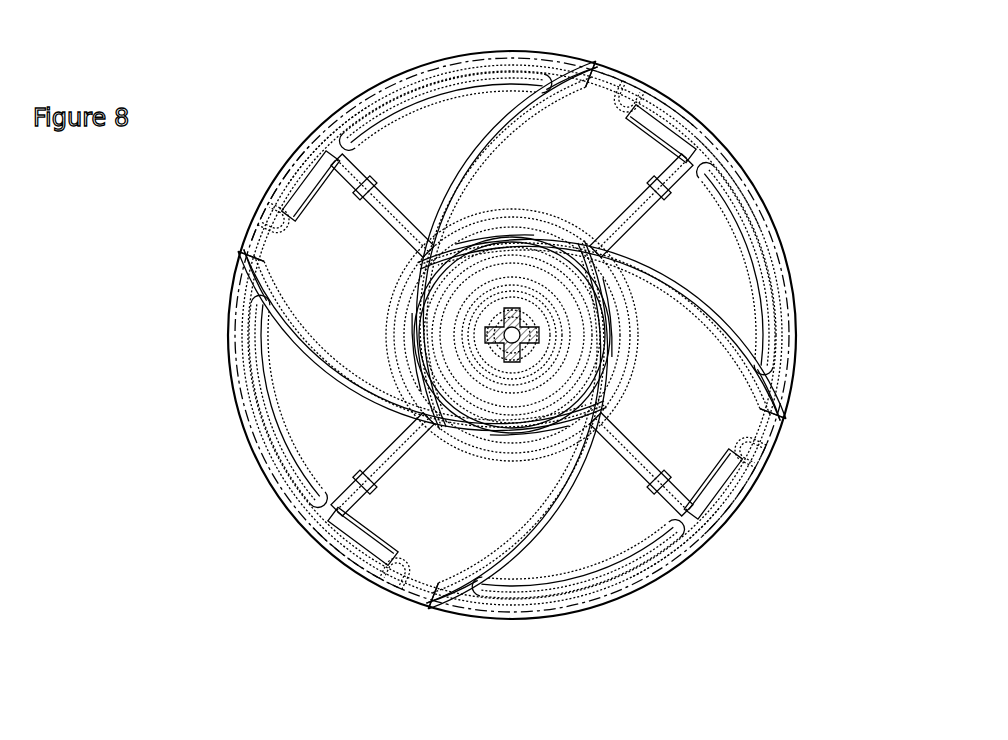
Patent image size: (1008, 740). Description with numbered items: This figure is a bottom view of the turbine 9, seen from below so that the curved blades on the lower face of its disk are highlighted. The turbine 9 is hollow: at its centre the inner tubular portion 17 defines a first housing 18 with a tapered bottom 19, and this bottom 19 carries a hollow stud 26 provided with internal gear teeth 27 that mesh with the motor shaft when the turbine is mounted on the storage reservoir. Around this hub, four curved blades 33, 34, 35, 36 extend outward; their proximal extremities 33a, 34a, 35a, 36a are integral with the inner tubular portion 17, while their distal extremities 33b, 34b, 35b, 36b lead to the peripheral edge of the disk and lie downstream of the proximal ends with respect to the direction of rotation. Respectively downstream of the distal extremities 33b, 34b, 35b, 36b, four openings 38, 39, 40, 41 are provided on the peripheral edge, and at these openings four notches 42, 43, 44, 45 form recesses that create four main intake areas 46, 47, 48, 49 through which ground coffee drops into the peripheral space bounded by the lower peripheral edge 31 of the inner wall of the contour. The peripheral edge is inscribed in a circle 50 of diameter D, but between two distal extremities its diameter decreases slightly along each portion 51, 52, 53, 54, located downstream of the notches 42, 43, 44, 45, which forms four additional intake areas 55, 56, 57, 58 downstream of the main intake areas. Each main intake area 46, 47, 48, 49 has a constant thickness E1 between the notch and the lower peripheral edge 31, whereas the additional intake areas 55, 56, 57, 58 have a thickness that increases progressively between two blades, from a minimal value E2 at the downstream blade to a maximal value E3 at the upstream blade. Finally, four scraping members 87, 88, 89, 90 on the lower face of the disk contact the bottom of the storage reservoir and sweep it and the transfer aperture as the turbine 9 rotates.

The turbine 9 is at (848, 91).
The inner tubular portion 17 is at (497, 240).
The first housing 18 is at (479, 278).
The tapered bottom 19 is at (460, 356).
The hollow stud 26 is at (523, 318).
The internal gear teeth 27 is at (523, 346).
The lower peripheral edge 31 is at (252, 433).
The blade 33 is at (676, 283).
The proximal extremity 33a is at (556, 248).
The distal extremity 33b is at (772, 422).
The blade 34 is at (560, 504).
The proximal extremity 34a is at (610, 387).
The distal extremity 34b is at (425, 600).
The blade 35 is at (332, 382).
The proximal extremity 35a is at (466, 440).
The distal extremity 35b is at (253, 233).
The blade 36 is at (455, 178).
The proximal extremity 36a is at (419, 292).
The distal extremity 36b is at (605, 70).
The opening 38 is at (703, 128).
The opening 39 is at (722, 489).
The opening 40 is at (361, 571).
The opening 41 is at (285, 181).
The notch 42 is at (677, 121).
The notch 43 is at (733, 478).
The notch 44 is at (327, 538).
The notch 45 is at (310, 173).
The main intake area 46 is at (637, 100).
The main intake area 47 is at (757, 449).
The main intake area 48 is at (386, 575).
The main intake area 49 is at (277, 190).
The circle 50 is at (245, 411).
The portion 51 is at (752, 208).
The portion 52 is at (665, 562).
The portion 53 is at (265, 456).
The portion 54 is at (373, 110).
The additional intake area 55 is at (736, 176).
The additional intake area 56 is at (680, 548).
The additional intake area 57 is at (278, 482).
The additional intake area 58 is at (342, 122).
The scraping member 87 is at (648, 225).
The scraping member 88 is at (634, 460).
The scraping member 89 is at (372, 457).
The scraping member 90 is at (400, 258).
The diameter D is at (719, 133).
The constant thickness E1 is at (360, 534).
The minimal thickness E2 is at (309, 537).
The maximal thickness E3 is at (246, 271).